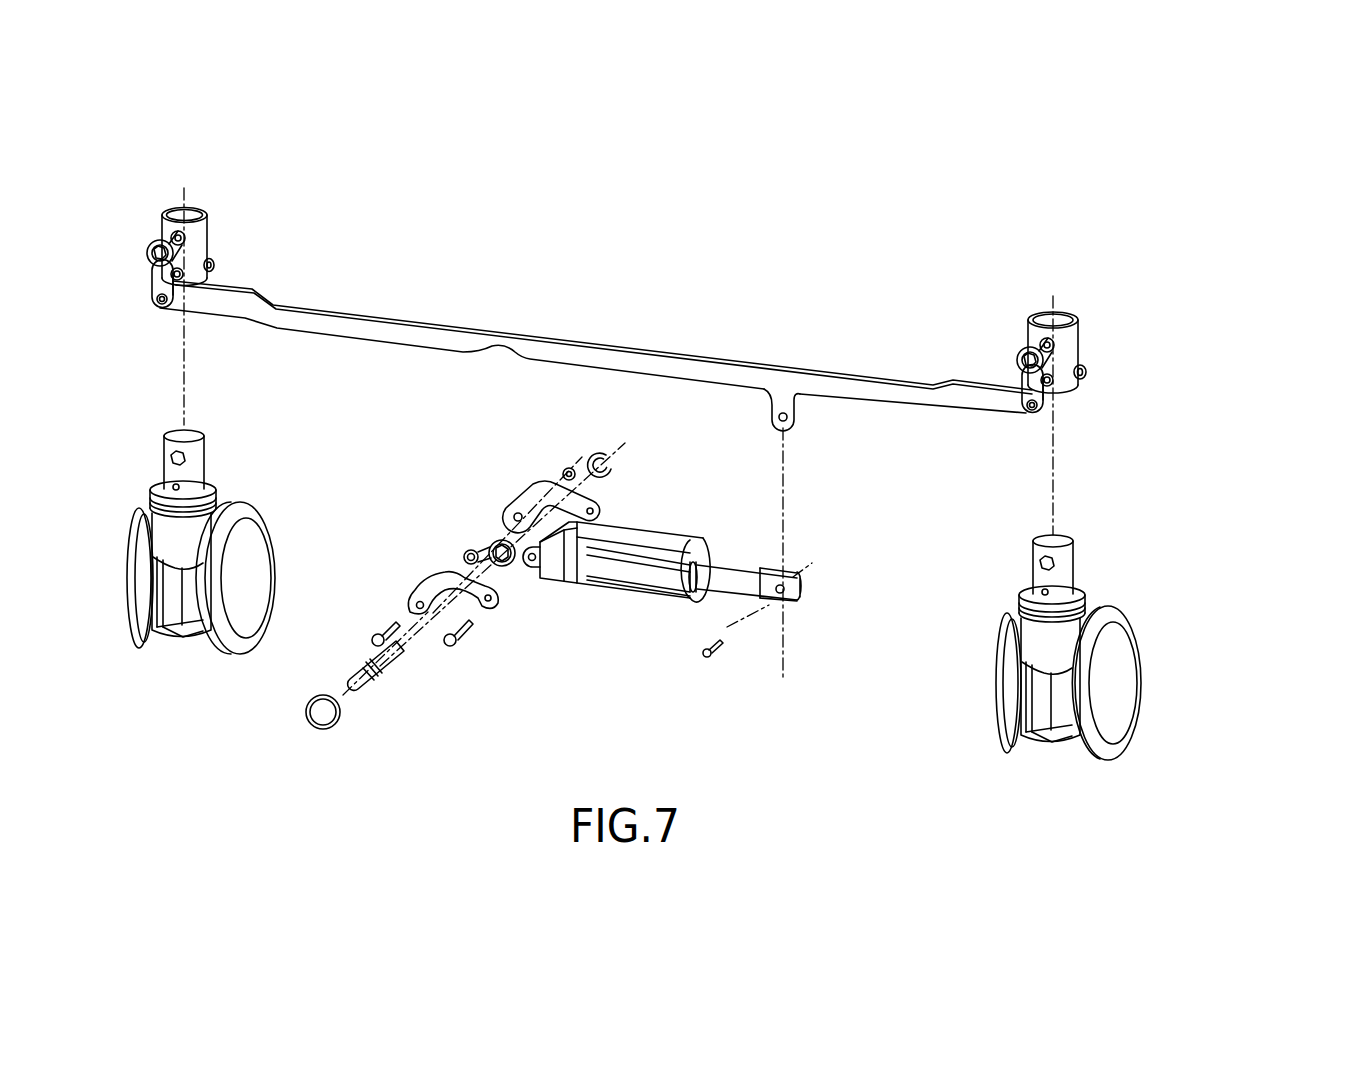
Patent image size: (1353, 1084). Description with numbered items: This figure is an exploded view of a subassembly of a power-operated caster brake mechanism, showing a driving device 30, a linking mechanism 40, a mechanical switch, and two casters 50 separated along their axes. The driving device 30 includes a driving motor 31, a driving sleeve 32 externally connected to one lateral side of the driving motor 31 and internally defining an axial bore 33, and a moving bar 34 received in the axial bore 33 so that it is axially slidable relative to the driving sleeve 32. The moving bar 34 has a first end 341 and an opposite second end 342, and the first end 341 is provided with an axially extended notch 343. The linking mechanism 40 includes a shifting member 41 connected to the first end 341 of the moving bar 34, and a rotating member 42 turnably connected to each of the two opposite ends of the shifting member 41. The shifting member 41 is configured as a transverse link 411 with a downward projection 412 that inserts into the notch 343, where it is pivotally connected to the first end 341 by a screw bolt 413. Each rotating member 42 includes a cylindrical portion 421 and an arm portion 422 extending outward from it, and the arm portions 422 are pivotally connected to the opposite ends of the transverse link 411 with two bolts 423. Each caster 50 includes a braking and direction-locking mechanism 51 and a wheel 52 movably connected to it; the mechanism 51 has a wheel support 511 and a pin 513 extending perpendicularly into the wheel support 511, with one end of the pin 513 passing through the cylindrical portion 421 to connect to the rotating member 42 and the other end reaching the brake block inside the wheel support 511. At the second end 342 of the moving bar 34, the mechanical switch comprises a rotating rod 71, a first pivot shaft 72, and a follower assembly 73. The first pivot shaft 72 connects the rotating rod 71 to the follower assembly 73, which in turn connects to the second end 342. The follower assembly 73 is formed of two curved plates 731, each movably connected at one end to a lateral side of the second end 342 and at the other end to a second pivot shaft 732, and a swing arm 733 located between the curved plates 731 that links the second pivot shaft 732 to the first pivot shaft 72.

The driving device 30 is at (722, 500).
The driving motor 31 is at (655, 545).
The driving sleeve 32 is at (567, 588).
The axial bore 33 is at (697, 572).
The moving bar 34 is at (741, 582).
The first end 341 is at (783, 600).
The second end 342 is at (533, 572).
The notch 343 is at (803, 585).
The linking mechanism 40 is at (550, 286).
The shifting member 41 is at (418, 320).
The transverse link 411 is at (690, 372).
The downward projection 412 is at (782, 392).
The screw bolt 413 is at (707, 663).
The rotating member 42 is at (1030, 350).
The cylindrical portion 421 is at (1018, 358).
The arm portion 422 is at (1025, 392).
The bolt 423 is at (1038, 410).
The caster 50 is at (1178, 672).
The braking and direction-locking mechanism 51 is at (1063, 574).
The wheel support 511 is at (1053, 320).
The pin 513 is at (1052, 382).
The wheel 52 is at (1113, 693).
The rotating rod 71 is at (380, 690).
The first pivot shaft 72 is at (384, 666).
The follower assembly 73 is at (410, 521).
The curved plate 731 is at (530, 485).
The second pivot shaft 732 is at (383, 633).
The swing arm 733 is at (482, 549).